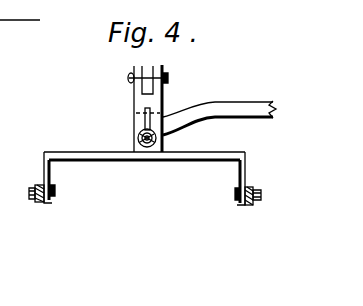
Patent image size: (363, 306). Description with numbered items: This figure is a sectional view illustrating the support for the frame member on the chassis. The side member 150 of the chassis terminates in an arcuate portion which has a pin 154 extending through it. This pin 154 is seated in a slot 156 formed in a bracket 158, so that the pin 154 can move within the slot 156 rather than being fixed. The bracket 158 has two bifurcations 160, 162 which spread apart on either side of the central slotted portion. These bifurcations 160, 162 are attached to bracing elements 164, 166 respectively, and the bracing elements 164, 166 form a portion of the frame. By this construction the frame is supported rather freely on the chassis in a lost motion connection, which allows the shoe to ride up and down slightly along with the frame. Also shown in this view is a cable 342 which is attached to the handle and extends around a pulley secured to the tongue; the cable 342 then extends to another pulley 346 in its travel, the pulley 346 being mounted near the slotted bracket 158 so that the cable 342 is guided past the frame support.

The side member 150 is at (227, 101).
The pin 154 is at (149, 146).
The slot 156 is at (134, 113).
The bracket 158 is at (108, 161).
The bifurcation 160 is at (247, 170).
The bifurcation 162 is at (47, 171).
The bracing element 164 is at (258, 200).
The bracing element 166 is at (40, 204).
The cable 342 is at (163, 88).
The pulley 346 is at (160, 73).